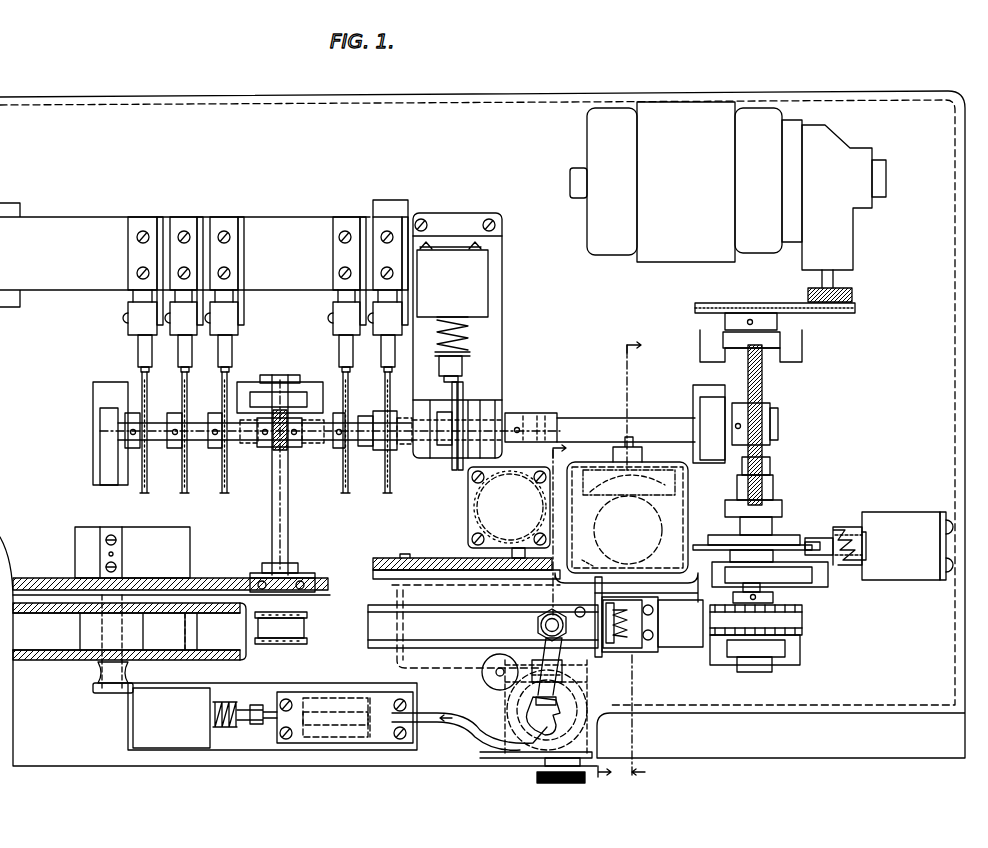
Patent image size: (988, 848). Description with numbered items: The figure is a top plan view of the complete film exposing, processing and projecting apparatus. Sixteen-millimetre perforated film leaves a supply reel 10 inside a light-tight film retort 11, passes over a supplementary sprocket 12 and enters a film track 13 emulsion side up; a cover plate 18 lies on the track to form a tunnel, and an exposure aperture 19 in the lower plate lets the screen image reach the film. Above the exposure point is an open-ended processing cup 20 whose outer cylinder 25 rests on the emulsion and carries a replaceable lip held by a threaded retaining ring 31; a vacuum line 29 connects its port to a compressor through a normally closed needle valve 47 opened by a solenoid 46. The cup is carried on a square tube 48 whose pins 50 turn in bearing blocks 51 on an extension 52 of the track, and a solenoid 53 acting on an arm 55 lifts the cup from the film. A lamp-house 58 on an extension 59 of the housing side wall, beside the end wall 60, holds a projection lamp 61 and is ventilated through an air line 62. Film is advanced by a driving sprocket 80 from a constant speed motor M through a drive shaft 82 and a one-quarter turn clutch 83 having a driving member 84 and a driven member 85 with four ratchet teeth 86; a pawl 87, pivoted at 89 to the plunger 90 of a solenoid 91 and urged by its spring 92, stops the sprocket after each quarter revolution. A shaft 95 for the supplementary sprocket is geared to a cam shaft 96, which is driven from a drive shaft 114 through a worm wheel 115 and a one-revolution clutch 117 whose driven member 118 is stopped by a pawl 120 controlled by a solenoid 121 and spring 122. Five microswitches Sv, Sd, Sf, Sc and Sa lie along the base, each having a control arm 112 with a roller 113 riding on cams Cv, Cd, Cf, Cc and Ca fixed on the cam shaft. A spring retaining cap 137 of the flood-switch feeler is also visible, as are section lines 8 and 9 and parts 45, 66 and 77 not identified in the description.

The section line 8 is at (642, 559).
The section line 9 is at (588, 610).
The supply reel 10 is at (40, 612).
The film retort 11 is at (45, 665).
The supplementary sprocket 12 is at (300, 645).
The film track 13 is at (392, 650).
The cover plate 18 is at (378, 605).
The exposure aperture 19 is at (538, 625).
The processing cup 20 is at (549, 614).
The outer cylinder 25 is at (546, 630).
The vacuum line 29 is at (470, 735).
The threaded retaining ring 31 is at (565, 645).
The relay assembly 45 is at (350, 680).
The solenoid 46 is at (205, 718).
The needle valve 47 is at (362, 738).
The square tube 48 is at (563, 670).
The pins 50 is at (563, 680).
The bearing blocks 51 is at (558, 692).
The extension of the film track 52 is at (485, 669).
The solenoid 53 is at (537, 748).
The arm 55 is at (560, 718).
The lamp-house 58 is at (690, 497).
The extension of the side wall 59 is at (596, 580).
The end wall 60 is at (688, 470).
The lamp 61 is at (600, 520).
The air line 62 is at (470, 518).
The arcuate slot 66 is at (662, 490).
The support plate 77 is at (648, 690).
The driving sprocket 80 is at (803, 622).
The drive shaft 82 is at (773, 595).
The one-quarter turn clutch 83 is at (788, 538).
The driving member 84 is at (806, 540).
The driven member 85 is at (760, 540).
The ratchet teeth 86 is at (752, 547).
The pawl 87 is at (838, 560).
The pivot 89 is at (838, 528).
The plunger 90 is at (860, 562).
The solenoid 91 is at (907, 546).
The spring 92 is at (866, 530).
The shaft 95 is at (272, 530).
The cam shaft 96 is at (233, 460).
The control arm 112 is at (136, 350).
The roller 113 is at (231, 368).
The drive shaft 114 is at (583, 420).
The worm wheel 115 is at (764, 386).
The one-revolution clutch 117 is at (464, 398).
The driven member 118 is at (451, 389).
The pawl 120 is at (460, 374).
The solenoid 121 is at (457, 335).
The spring 122 is at (466, 345).
The spring retaining cap 137 is at (580, 607).
The electric motor M is at (660, 245).
The vacuum switch Sv is at (143, 294).
The developer switch Sd is at (184, 294).
The fixer switch Sf is at (224, 294).
The cup switch Sc is at (347, 294).
The advance switch Sa is at (388, 294).
The vacuum cam Cv is at (133, 445).
The developer cam Cd is at (175, 446).
The fixer cam Cf is at (217, 446).
The cup cam Cc is at (339, 445).
The advance cam Ca is at (382, 445).